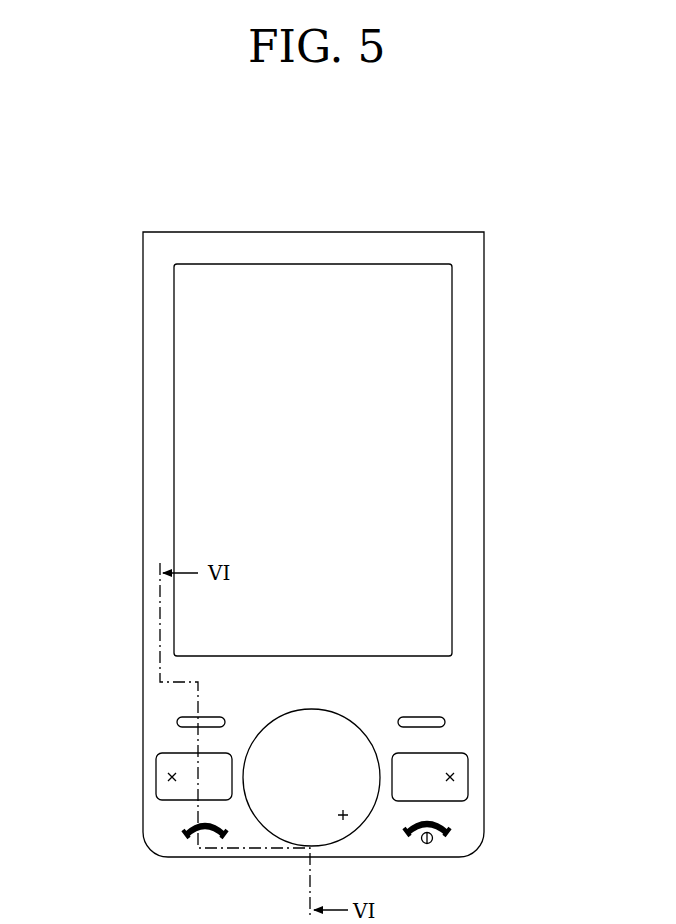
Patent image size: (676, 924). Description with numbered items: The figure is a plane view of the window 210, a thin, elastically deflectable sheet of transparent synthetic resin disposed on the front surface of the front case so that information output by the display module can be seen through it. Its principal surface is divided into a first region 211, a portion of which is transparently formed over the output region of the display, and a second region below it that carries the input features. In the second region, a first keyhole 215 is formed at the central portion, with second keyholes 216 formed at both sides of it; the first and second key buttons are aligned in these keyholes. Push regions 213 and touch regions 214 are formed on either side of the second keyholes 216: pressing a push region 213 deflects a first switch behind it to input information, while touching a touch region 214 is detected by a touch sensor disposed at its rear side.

The window 210 is at (113, 261).
The first region 211 is at (440, 448).
The push regions 213 is at (182, 833).
The touch regions 214 is at (177, 722).
The first keyhole 215 is at (343, 815).
The second keyholes 216 is at (172, 777).